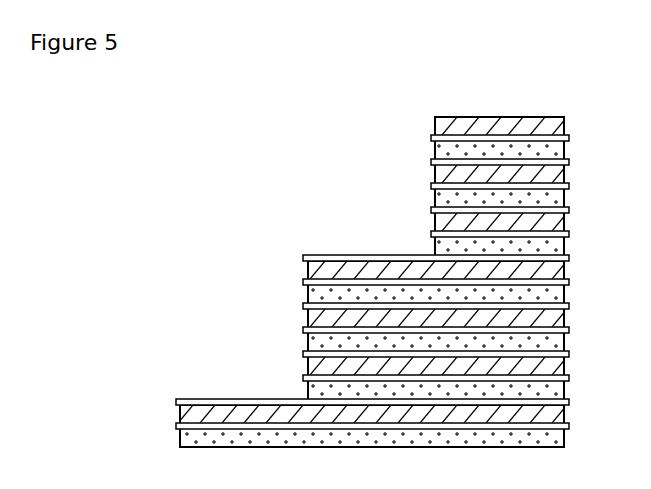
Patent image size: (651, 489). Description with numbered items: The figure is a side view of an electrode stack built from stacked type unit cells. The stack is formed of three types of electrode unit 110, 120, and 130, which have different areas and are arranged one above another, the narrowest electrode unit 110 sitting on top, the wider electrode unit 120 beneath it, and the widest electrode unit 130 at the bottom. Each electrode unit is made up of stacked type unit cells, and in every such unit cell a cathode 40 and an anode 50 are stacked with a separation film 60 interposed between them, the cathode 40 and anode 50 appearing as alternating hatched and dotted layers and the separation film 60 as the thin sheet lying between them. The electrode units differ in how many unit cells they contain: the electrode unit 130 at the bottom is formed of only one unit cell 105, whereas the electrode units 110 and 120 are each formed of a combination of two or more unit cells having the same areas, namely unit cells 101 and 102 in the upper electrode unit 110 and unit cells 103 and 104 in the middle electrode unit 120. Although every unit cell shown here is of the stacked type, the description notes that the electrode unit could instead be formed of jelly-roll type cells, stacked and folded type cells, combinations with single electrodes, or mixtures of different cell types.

The cathode 40 is at (527, 152).
The anode 50 is at (481, 125).
The separation film 60 is at (324, 256).
The unit cell 101 is at (476, 129).
The unit cell 102 is at (425, 189).
The unit cell 103 is at (301, 261).
The unit cell 104 is at (301, 333).
The unit cell 105 is at (173, 405).
The electrode unit 110 is at (501, 166).
The electrode unit 120 is at (436, 309).
The electrode unit 130 is at (373, 423).